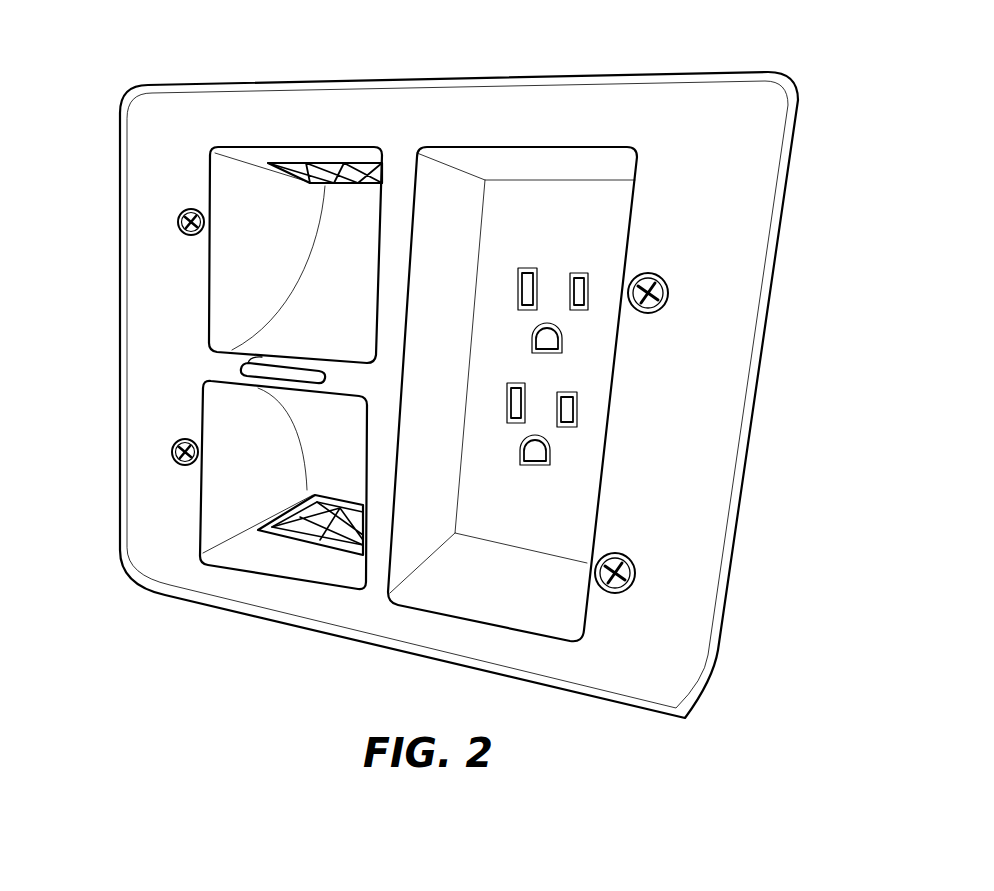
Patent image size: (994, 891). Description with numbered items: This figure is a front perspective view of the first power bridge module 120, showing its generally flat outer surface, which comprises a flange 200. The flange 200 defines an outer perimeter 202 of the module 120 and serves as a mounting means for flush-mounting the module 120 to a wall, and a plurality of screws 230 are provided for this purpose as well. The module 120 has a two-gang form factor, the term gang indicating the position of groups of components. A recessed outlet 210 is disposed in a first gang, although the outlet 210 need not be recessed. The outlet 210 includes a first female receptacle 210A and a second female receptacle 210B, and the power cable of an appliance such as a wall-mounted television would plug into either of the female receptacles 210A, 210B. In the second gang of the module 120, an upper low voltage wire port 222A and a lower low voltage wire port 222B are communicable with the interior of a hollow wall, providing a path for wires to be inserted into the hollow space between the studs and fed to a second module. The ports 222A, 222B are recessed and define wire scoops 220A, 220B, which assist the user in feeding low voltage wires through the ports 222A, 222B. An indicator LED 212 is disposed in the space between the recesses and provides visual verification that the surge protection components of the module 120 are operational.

The first power bridge module 120 is at (806, 415).
The flange 200 is at (737, 232).
The outer perimeter 202 is at (770, 305).
The recessed outlet 210 is at (540, 518).
The first female receptacle 210A is at (553, 298).
The second female receptacle 210B is at (540, 427).
The indicator LED 212 is at (250, 366).
The wire scoop 220A is at (270, 253).
The wire scoop 220B is at (232, 468).
The upper low voltage wire port 222A is at (312, 183).
The lower low voltage wire port 222B is at (313, 497).
The screws 230 is at (634, 570).